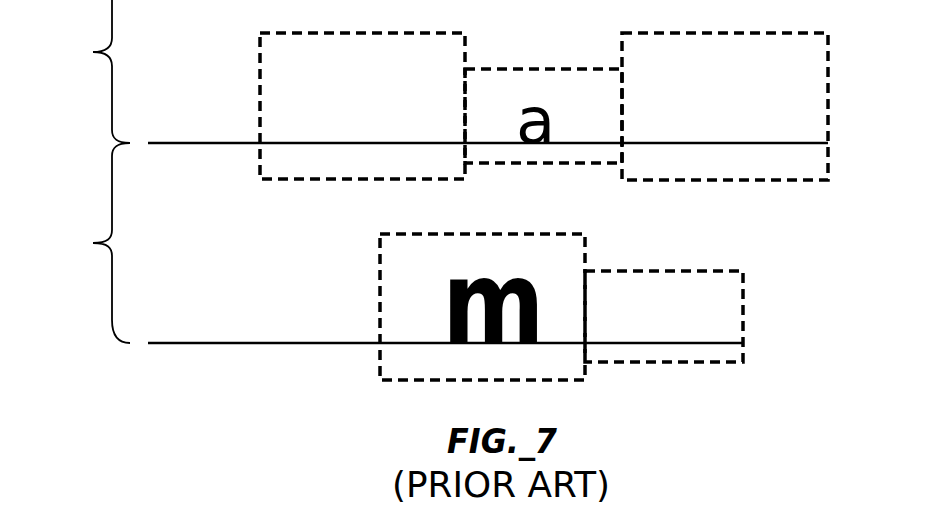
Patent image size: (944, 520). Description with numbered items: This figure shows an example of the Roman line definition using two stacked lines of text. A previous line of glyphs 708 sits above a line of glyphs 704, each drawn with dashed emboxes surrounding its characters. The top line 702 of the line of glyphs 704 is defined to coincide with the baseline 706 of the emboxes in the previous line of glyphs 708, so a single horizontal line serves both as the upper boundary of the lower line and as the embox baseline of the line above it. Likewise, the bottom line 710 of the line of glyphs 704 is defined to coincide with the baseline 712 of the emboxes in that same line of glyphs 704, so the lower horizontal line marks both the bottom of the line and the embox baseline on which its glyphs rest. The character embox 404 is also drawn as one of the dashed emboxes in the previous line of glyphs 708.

The previous line of glyphs 708 is at (78, 71).
The line of glyphs 704 is at (78, 243).
The top line 702 is at (186, 144).
The character bounding box 404 is at (364, 182).
The baseline of the emboxes in the previous line of glyphs 706 is at (803, 143).
The bottom line 710 is at (207, 343).
The baseline of the emboxes in the line of glyphs 712 is at (727, 343).